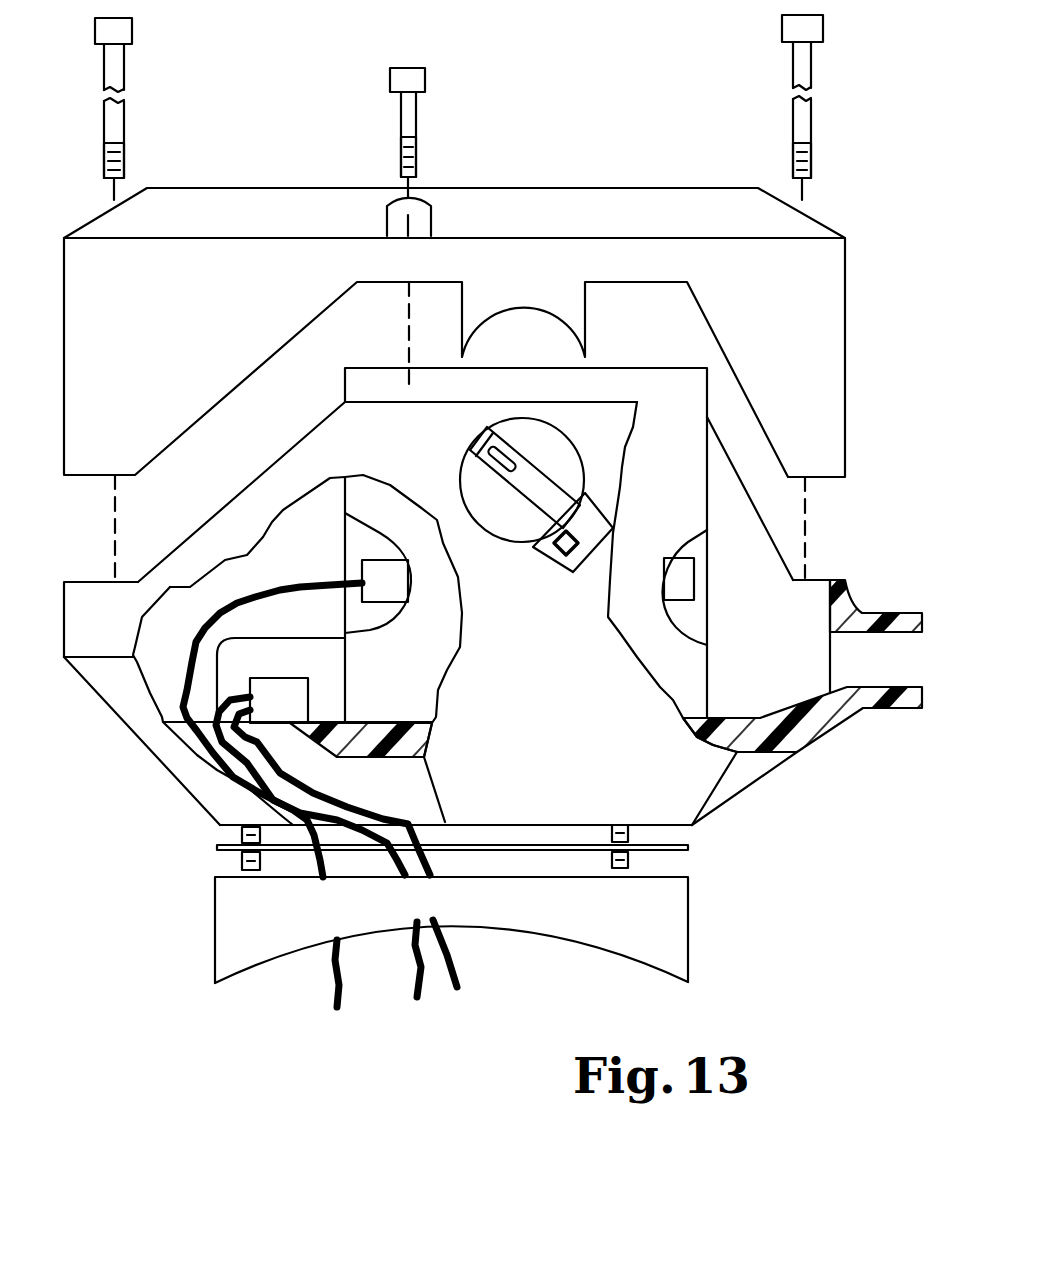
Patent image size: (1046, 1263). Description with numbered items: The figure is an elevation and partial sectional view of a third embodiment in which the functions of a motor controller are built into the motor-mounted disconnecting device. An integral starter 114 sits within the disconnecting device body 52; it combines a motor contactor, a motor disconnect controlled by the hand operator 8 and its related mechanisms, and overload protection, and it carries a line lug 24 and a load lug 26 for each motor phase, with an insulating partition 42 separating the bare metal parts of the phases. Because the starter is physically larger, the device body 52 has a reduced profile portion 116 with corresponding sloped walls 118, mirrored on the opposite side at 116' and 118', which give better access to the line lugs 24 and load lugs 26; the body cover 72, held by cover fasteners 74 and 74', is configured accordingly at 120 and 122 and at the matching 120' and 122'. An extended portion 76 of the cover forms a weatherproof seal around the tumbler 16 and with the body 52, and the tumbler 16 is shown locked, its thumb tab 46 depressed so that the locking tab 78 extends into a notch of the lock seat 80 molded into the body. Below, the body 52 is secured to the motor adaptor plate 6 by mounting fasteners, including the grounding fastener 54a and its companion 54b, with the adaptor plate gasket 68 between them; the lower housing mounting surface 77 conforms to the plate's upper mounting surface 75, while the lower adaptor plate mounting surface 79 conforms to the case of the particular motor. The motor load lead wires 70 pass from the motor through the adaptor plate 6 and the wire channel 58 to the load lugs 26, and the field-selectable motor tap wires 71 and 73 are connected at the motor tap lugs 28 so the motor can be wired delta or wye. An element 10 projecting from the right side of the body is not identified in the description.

The motor adaptor plate 6 is at (215, 923).
The hand operator 8 is at (517, 507).
The pipe 10 is at (877, 613).
The tumbler 16 is at (485, 532).
The line lug 24 is at (697, 580).
The load lug 26 is at (362, 557).
The motor tap lugs 28 is at (308, 707).
The insulating partition 42 is at (265, 638).
The thumb tab 46 is at (514, 446).
The disconnecting device body 52 is at (143, 748).
The grounding fastener 54a is at (628, 860).
The clamp 54b is at (242, 835).
The wire channel 58 is at (413, 799).
The adaptor plate gasket 68 is at (220, 853).
The motor load lead wires 70 is at (188, 660).
The internal motor connection 71 is at (413, 967).
The body cover 72 is at (845, 320).
The internal motor connection 73 is at (462, 968).
The cover fasteners 74 is at (470, 107).
The center bolt 74' is at (425, 133).
The upper mounting surface 75 is at (547, 877).
The extended portion 76 is at (527, 307).
The lower housing mounting surface 77 is at (547, 822).
The locking tab 78 is at (552, 550).
The lower adaptor plate mounting surface 79 is at (597, 942).
The lock seat 80 is at (612, 526).
The integral starter 114 is at (345, 400).
The reduced profile portion 116 is at (95, 600).
The lower right block 116' is at (842, 617).
The sloped walls 118 is at (241, 492).
The inclined wall 118' is at (750, 498).
The cover configured portion 120 is at (73, 527).
The foot 120' is at (850, 527).
The cover configured portion 122 is at (246, 378).
The inclined surface 122' is at (746, 379).